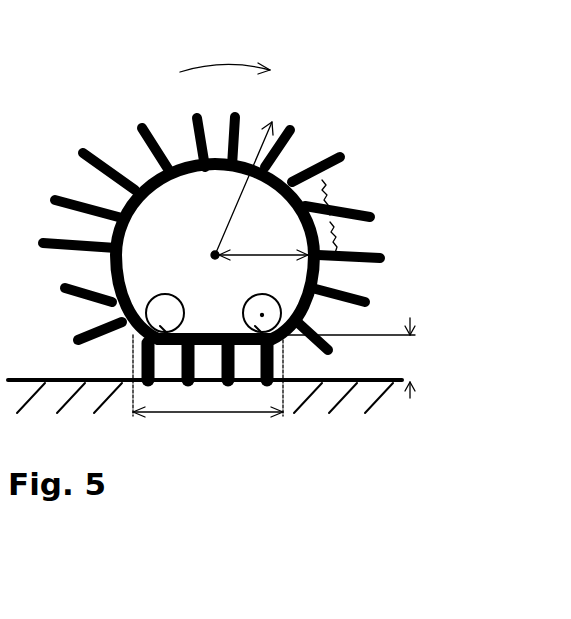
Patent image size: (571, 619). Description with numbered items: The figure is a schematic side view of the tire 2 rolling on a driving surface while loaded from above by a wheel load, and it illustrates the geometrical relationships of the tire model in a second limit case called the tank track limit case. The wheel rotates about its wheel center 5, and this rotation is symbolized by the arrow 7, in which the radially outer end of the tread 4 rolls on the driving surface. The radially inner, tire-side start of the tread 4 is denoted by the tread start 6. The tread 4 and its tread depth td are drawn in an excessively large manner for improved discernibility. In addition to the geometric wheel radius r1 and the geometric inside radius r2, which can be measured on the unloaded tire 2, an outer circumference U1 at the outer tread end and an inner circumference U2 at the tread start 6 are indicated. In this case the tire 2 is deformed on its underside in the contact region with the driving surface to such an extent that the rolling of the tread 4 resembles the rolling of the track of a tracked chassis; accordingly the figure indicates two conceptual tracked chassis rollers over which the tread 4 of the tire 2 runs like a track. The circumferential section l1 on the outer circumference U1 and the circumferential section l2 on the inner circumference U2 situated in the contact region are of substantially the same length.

The tire 2 is at (93, 124).
The tread 4 is at (76, 311).
The wheel center 5 is at (211, 257).
The tread start 6 is at (110, 233).
The arrow 7 is at (225, 56).
The outer circumference U1 is at (216, 129).
The inner circumference U2 is at (167, 199).
The geometric wheel radius r1 is at (244, 188).
The geometric inside radius r2 is at (263, 245).
The circumferential section on the outer circumference l1 is at (208, 376).
The circumferential section on the inner circumference l2 is at (213, 314).
The tread depth td is at (349, 358).